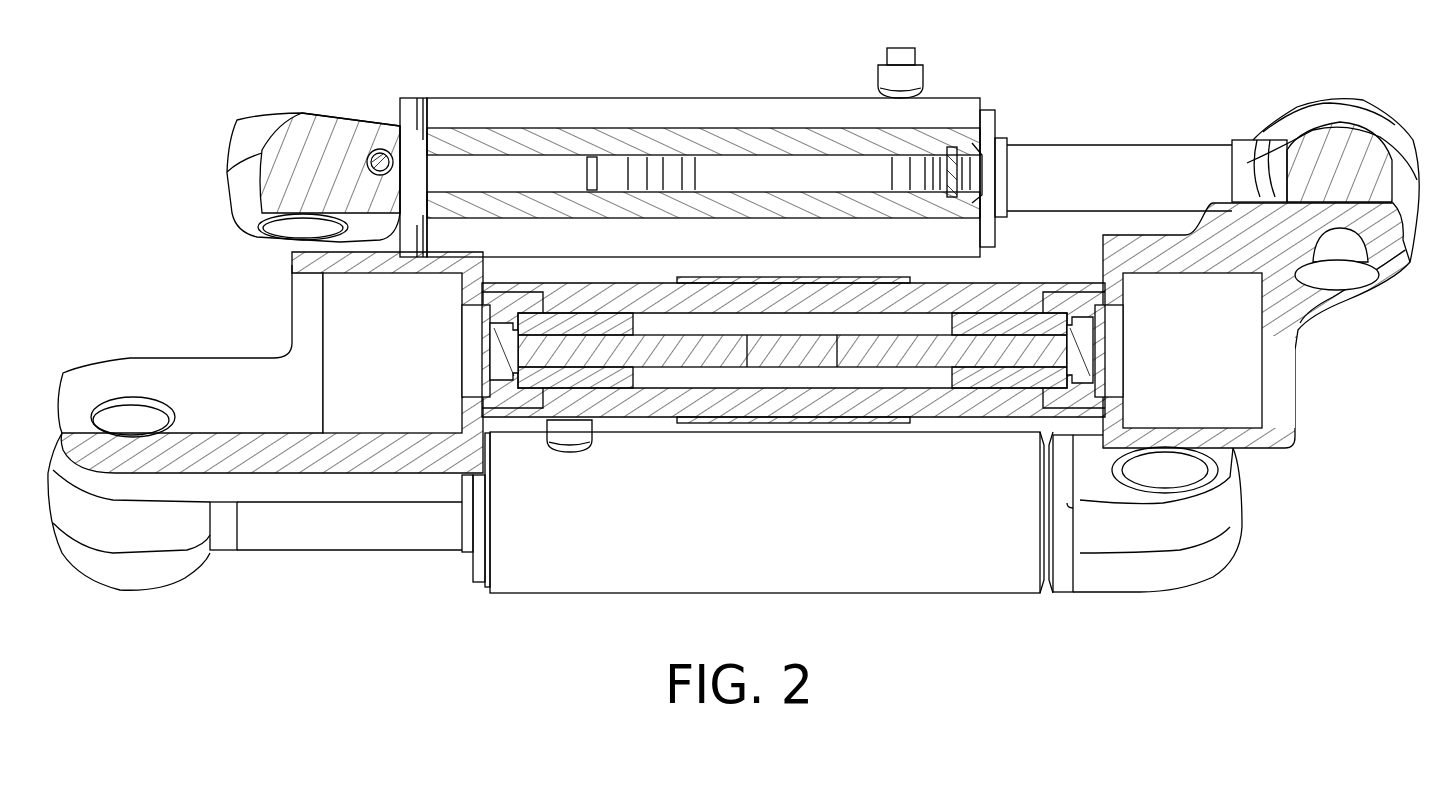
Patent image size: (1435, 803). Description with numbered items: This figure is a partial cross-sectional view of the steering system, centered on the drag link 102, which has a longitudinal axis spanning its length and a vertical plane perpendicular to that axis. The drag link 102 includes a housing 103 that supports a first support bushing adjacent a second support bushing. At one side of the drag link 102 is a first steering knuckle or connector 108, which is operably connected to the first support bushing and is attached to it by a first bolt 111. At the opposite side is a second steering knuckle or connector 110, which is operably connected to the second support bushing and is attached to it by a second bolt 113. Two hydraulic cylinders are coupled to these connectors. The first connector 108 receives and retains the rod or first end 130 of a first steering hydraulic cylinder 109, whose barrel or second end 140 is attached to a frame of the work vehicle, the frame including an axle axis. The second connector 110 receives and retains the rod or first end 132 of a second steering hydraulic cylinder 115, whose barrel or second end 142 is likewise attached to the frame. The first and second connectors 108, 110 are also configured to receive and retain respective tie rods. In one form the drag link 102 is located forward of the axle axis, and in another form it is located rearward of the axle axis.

The drag link 102 is at (1020, 296).
The housing 103 is at (795, 425).
The first connector 108 is at (1247, 388).
The first steering hydraulic cylinder 109 is at (957, 580).
The second connector 110 is at (338, 319).
The first bolt 111 is at (1058, 347).
The second bolt 113 is at (520, 350).
The second steering hydraulic cylinder 115 is at (698, 108).
The first end 130 is at (130, 580).
The first end 132 is at (1362, 112).
The second end 140 is at (1228, 550).
The second end 142 is at (292, 140).